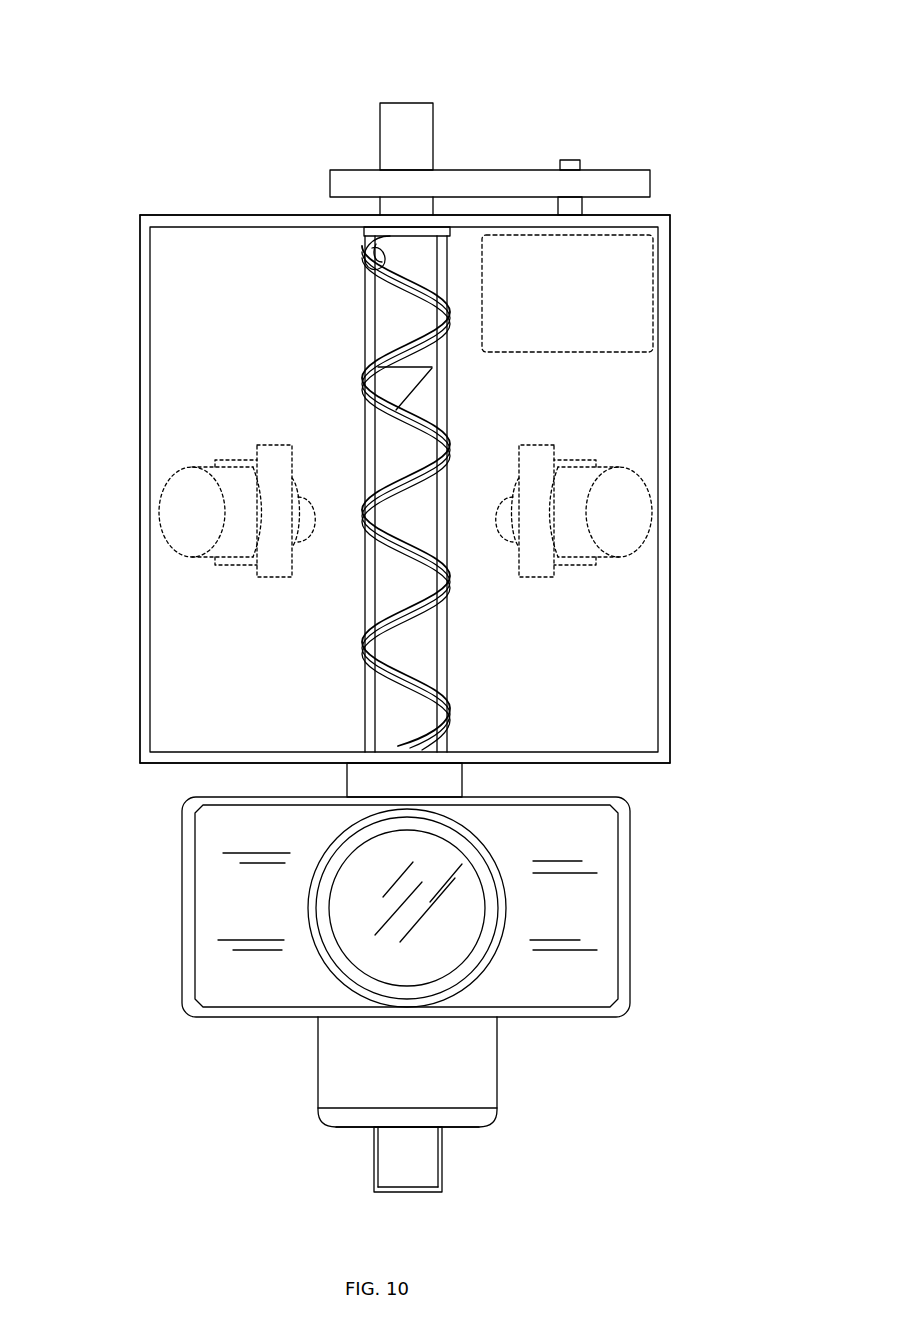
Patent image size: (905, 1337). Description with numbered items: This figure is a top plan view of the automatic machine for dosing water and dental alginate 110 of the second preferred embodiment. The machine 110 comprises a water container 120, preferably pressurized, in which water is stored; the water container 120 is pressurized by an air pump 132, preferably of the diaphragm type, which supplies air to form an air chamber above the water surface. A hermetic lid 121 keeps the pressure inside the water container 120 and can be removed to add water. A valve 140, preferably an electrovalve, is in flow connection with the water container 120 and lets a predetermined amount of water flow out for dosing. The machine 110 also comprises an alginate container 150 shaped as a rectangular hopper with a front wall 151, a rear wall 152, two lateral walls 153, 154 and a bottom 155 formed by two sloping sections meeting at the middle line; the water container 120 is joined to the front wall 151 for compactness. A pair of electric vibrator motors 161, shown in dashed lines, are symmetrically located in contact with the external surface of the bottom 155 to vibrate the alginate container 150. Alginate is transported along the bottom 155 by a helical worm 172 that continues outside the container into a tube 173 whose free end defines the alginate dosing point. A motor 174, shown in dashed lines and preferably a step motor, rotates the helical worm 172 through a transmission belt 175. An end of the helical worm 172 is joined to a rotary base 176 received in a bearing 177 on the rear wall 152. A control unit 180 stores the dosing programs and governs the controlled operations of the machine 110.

The automatic machine for dosing water and dental alginate 110 is at (163, 92).
The water container 120 is at (632, 843).
The hermetic lid 121 is at (507, 904).
The air pump 132 is at (497, 1062).
The valve 140 is at (374, 1172).
The alginate container 150 is at (140, 215).
The front wall 151 is at (176, 763).
The rear wall 152 is at (230, 213).
The lateral wall 153 is at (665, 568).
The lateral wall 154 is at (140, 605).
The bottom 155 is at (326, 409).
The electric vibrator motor 161 is at (187, 507).
The helical worm 172 is at (448, 712).
The tube 173 is at (465, 788).
The motor 174 is at (628, 283).
The transmission belt 175 is at (625, 168).
The rotary base 176 is at (430, 102).
The bearing 177 is at (362, 233).
The control unit 180 is at (455, 1130).